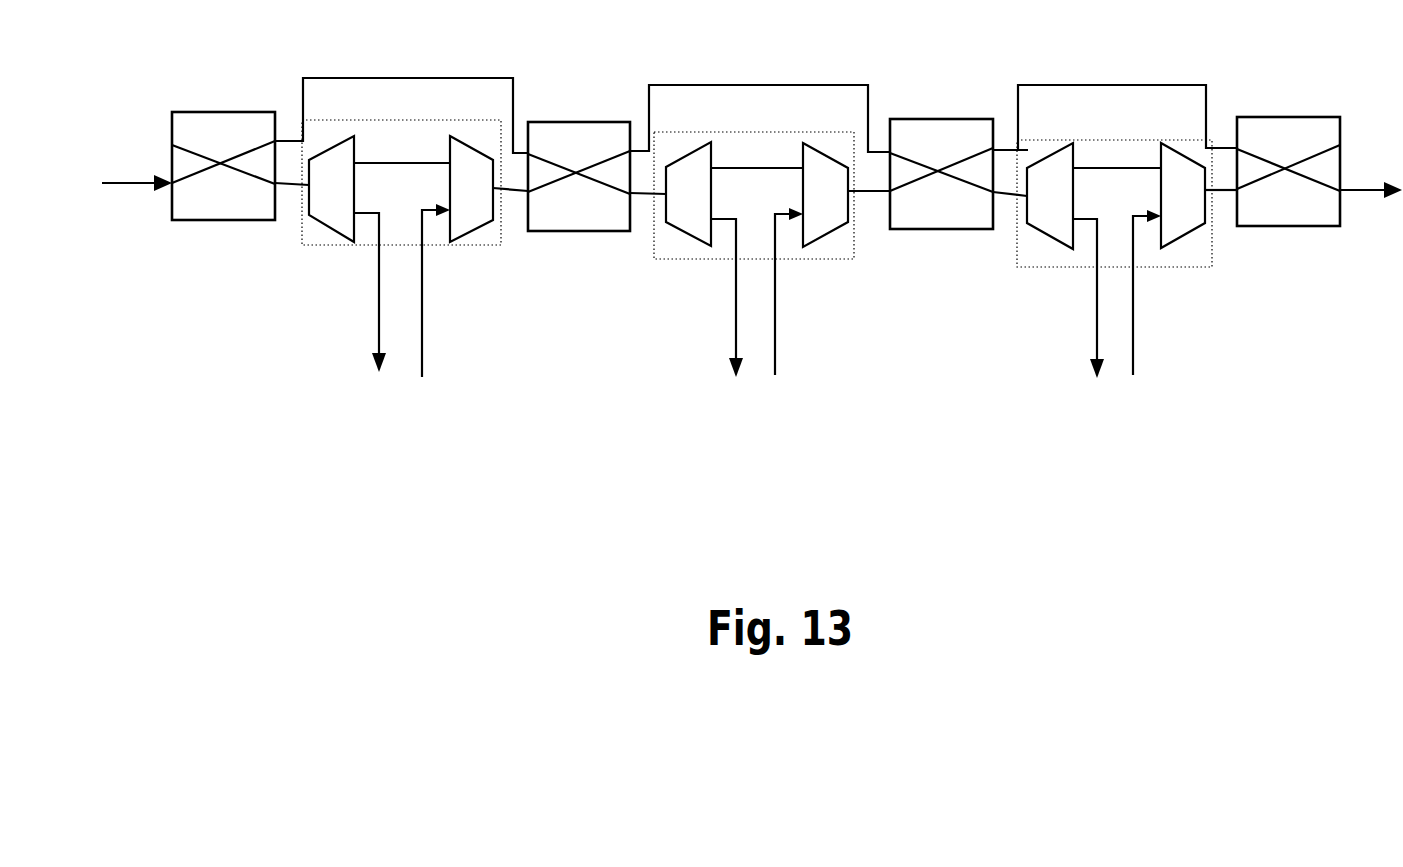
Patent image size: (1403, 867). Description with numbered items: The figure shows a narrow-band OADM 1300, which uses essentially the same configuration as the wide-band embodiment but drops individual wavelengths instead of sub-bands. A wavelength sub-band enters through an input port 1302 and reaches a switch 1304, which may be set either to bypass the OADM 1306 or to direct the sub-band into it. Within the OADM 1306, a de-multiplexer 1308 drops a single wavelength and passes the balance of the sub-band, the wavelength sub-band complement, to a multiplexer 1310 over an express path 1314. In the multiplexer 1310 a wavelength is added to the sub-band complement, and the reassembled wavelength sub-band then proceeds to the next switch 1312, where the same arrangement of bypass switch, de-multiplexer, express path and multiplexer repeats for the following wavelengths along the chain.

The narrow-band OADM 1300 is at (752, 267).
The input port 1302 is at (133, 182).
The switch 1304 is at (223, 113).
The OADM 1306 is at (330, 245).
The de-multiplexer 1308 is at (360, 188).
The multiplexer 1310 is at (472, 227).
The switch 1312 is at (568, 120).
The express path 1314 is at (398, 162).